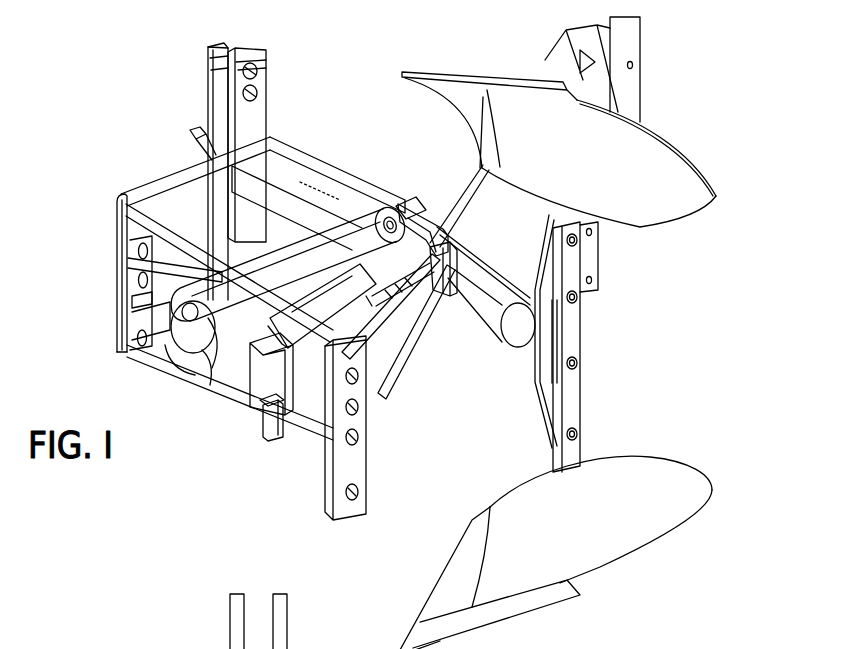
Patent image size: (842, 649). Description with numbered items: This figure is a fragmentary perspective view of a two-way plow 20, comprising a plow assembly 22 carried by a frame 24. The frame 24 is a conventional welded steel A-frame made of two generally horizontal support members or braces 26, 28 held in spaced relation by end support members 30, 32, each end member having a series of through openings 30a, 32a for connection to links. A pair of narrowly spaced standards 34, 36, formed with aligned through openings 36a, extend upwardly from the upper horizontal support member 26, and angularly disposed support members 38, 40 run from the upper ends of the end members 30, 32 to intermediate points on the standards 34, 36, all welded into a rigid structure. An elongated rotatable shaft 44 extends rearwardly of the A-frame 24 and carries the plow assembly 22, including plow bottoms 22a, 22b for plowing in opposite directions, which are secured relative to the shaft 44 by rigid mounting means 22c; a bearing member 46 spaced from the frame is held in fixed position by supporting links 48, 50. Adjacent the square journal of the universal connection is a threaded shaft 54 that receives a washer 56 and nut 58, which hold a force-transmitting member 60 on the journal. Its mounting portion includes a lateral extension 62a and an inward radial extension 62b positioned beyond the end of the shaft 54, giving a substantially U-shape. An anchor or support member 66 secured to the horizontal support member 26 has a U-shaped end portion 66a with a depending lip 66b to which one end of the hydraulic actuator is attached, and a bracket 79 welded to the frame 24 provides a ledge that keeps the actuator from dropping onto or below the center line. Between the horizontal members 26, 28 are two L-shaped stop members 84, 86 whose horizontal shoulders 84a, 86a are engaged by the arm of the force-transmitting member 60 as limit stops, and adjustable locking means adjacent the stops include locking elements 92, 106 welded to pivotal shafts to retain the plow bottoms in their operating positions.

The plow 20 is at (331, 140).
The plow assembly 22 is at (606, 230).
The plow bottom 22a is at (652, 539).
The plow bottom 22b is at (659, 141).
The rigid mounting means 22c is at (597, 317).
The frame 24 is at (102, 203).
The upper horizontal support member 26 is at (157, 197).
The horizontal support member 28 is at (175, 350).
The end support member 30 is at (120, 278).
The through openings 30a is at (138, 271).
The end support member 32 is at (366, 463).
The through openings 32a is at (358, 437).
The standard 34 is at (212, 100).
The standard 36 is at (258, 122).
The through openings 36a is at (258, 91).
The angularly disposed support member 38 is at (173, 172).
The angularly disposed support member 40 is at (292, 221).
The elongated shaft 44 is at (428, 305).
The bearing member 46 is at (456, 244).
The supporting link 48 is at (433, 333).
The supporting link 50 is at (302, 165).
The threaded shaft 54 is at (185, 378).
The washer 56 is at (208, 388).
The nut 58 is at (210, 370).
The force-transmitting member 60 is at (273, 385).
The extension 62a is at (205, 291).
The inward radial extension 62b is at (170, 336).
The anchor or support member 66 is at (380, 292).
The reversely bent or U-shaped end portion 66a is at (426, 214).
The depending lip 66b is at (399, 206).
The bracket 79 is at (330, 288).
The stop member 84 is at (136, 320).
The ledge or shoulder 84a is at (132, 298).
The stop member 86 is at (280, 436).
The ledge or shoulder 86a is at (260, 408).
The locking element 92 is at (145, 248).
The locking element 106 is at (322, 306).